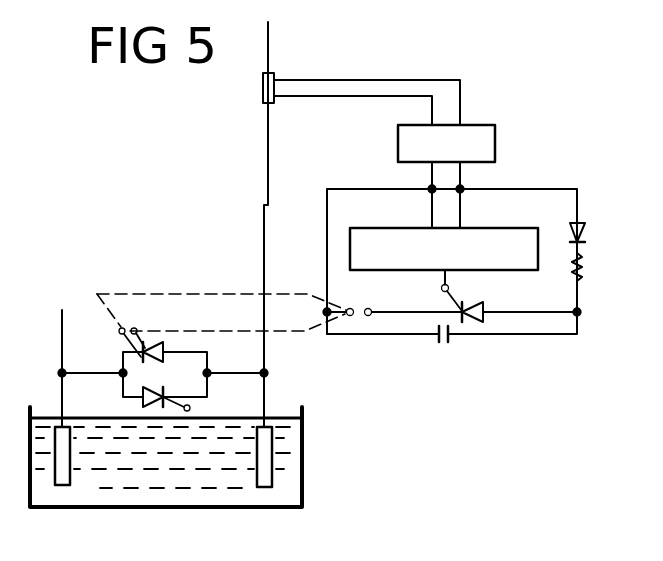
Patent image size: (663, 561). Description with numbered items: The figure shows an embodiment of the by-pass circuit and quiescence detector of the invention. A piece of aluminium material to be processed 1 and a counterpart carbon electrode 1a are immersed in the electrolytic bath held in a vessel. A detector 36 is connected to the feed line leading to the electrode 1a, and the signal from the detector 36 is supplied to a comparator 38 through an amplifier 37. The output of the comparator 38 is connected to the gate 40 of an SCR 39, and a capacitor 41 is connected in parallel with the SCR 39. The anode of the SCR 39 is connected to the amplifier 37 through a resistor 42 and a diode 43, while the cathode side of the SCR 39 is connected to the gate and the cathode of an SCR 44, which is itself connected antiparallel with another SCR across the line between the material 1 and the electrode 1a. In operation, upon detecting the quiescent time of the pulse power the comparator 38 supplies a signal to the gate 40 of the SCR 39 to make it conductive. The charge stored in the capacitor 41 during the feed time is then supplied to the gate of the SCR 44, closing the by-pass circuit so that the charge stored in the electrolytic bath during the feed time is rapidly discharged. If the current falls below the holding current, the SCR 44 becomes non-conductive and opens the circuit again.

The material to be processed 1 is at (62, 486).
The counterpart carbon electrode 1a is at (265, 488).
The detector 36 is at (263, 96).
The amplifier 37 is at (496, 150).
The comparator 38 is at (378, 228).
The SCR 39 is at (481, 312).
The gate 40 is at (441, 289).
The capacitor 41 is at (445, 345).
The resistor 42 is at (588, 278).
The diode 43 is at (588, 236).
The SCR 44 is at (140, 366).